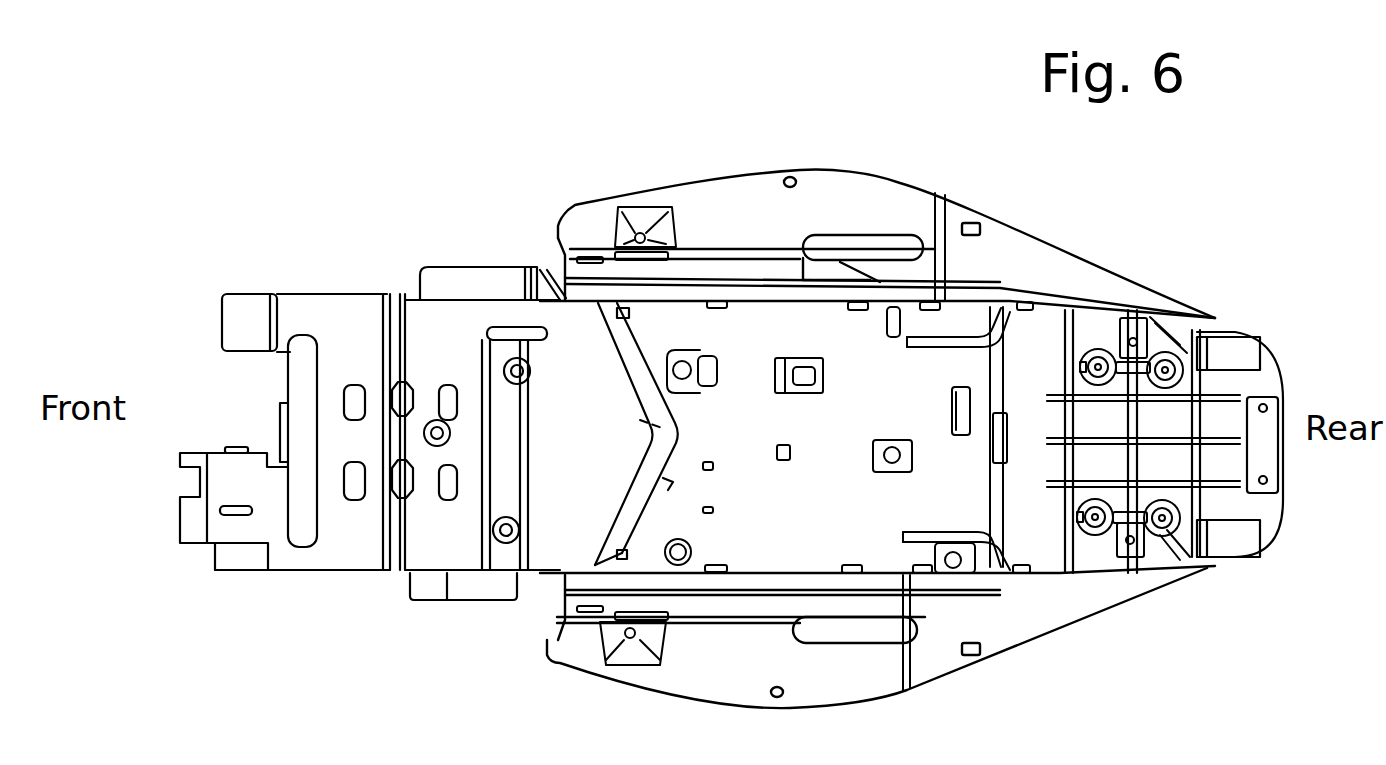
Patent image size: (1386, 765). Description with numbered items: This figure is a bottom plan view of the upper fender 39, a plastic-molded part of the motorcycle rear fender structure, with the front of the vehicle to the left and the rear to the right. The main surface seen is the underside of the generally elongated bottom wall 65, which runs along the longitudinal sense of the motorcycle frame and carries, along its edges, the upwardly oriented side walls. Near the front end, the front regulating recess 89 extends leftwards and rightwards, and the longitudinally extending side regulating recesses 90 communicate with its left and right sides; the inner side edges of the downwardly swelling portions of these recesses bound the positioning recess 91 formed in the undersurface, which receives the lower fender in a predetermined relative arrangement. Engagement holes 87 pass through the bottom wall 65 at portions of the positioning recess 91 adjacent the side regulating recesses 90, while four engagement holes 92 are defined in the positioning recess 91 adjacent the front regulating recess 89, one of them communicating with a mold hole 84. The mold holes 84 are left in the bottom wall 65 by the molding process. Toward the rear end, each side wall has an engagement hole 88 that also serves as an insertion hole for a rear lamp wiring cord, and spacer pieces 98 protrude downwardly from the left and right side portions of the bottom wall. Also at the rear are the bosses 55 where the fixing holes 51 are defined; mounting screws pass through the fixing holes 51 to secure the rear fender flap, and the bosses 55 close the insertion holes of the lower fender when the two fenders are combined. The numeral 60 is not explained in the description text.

The upper fender 39 is at (1023, 227).
The fixing holes 51 is at (1137, 393).
The bosses 55 is at (1100, 348).
The screw hole 60 is at (437, 448).
The bottom wall 65 is at (437, 323).
The mold holes 84 is at (712, 360).
The engagement holes 87 is at (735, 303).
The engagement hole 88 is at (1165, 315).
The front regulating recess 89 is at (640, 420).
The side regulating recesses 90 is at (685, 293).
The positioning recess 91 is at (745, 565).
The engagement holes 92 is at (647, 393).
The spacer pieces 98 is at (927, 350).